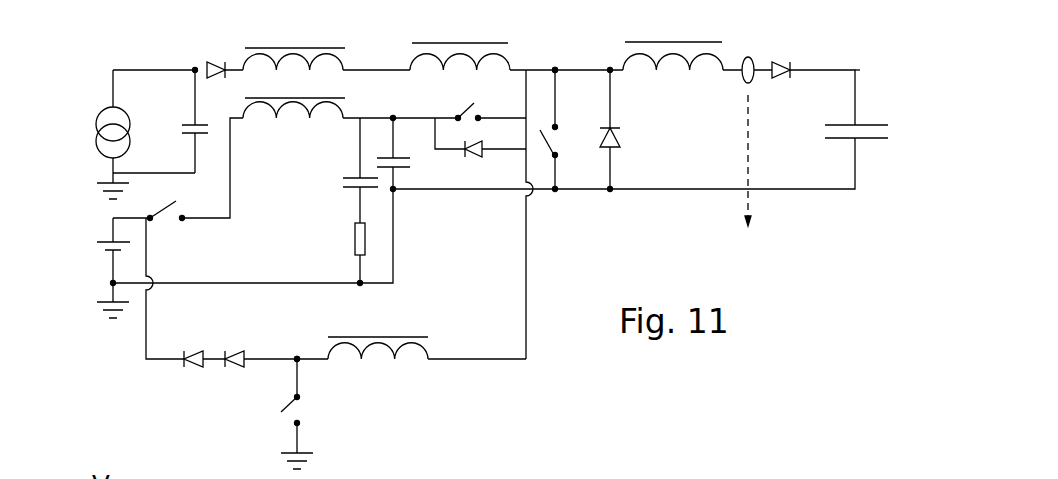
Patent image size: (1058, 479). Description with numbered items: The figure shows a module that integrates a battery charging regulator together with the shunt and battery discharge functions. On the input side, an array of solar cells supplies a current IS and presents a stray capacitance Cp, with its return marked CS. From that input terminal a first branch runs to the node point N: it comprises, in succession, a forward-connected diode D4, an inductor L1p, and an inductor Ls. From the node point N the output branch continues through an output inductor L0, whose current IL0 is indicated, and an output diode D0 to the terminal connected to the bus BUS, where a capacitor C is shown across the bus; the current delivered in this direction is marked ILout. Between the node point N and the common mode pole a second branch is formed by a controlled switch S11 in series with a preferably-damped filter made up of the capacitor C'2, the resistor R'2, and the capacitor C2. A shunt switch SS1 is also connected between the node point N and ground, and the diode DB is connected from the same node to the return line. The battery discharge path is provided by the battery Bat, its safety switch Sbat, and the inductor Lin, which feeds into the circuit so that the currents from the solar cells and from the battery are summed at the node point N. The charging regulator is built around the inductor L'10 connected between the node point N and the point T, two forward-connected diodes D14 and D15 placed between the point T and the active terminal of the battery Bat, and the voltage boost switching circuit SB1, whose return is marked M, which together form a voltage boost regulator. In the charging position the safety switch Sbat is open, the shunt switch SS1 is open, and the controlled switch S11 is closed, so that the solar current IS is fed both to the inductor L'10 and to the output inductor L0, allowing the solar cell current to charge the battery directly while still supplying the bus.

The solar array current IS is at (90, 132).
The current source ground / common CS is at (93, 181).
The stray capacitance Cp is at (178, 130).
The forward-connected diode D4 is at (210, 50).
The inductor L1p is at (305, 46).
The inductor Lin is at (294, 96).
The inductor Ls is at (465, 39).
The node point N is at (554, 57).
The controlled switch S11 is at (490, 127).
The shunt switch SS1 is at (567, 131).
The diode DB is at (628, 142).
The output inductor L0 is at (673, 42).
The inductor current sensor IL0 is at (748, 57).
The output inductor current ILout is at (780, 170).
The output diode D0 is at (787, 50).
The bus BUS is at (855, 82).
The bus capacitor C is at (856, 147).
The filter capacitor C2 is at (412, 175).
The filter capacitor C'2 is at (344, 191).
The damping resistor R'2 is at (340, 244).
The safety switch Sbat is at (187, 206).
The battery Bat is at (91, 275).
The forward-connected diode D14 is at (190, 384).
The forward-connected diode D15 is at (240, 384).
The point T is at (294, 346).
The inductor L'10 is at (389, 368).
The voltage boost switching circuit SB1 is at (313, 410).
The ground M is at (310, 466).